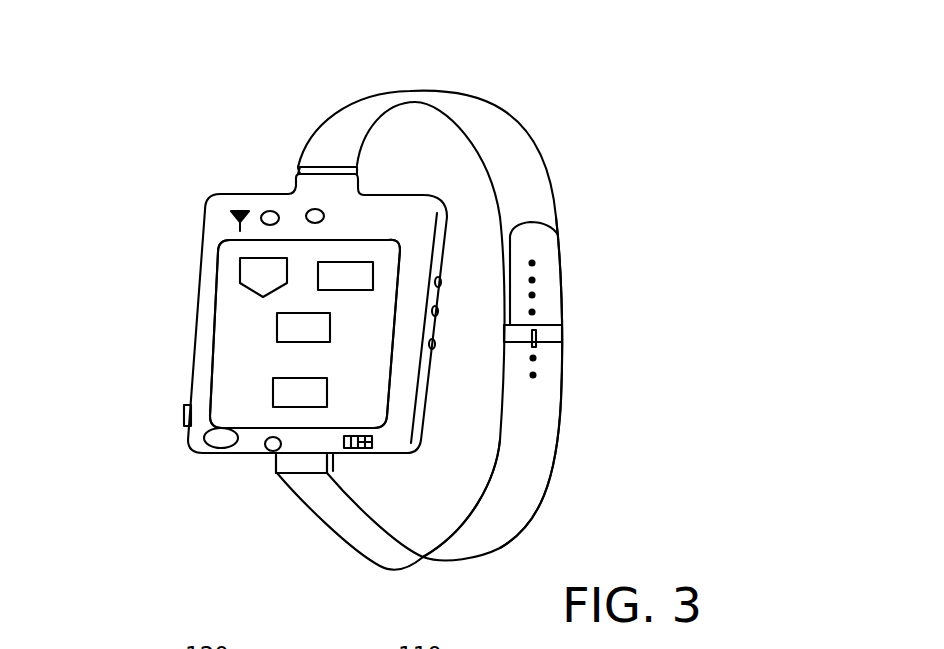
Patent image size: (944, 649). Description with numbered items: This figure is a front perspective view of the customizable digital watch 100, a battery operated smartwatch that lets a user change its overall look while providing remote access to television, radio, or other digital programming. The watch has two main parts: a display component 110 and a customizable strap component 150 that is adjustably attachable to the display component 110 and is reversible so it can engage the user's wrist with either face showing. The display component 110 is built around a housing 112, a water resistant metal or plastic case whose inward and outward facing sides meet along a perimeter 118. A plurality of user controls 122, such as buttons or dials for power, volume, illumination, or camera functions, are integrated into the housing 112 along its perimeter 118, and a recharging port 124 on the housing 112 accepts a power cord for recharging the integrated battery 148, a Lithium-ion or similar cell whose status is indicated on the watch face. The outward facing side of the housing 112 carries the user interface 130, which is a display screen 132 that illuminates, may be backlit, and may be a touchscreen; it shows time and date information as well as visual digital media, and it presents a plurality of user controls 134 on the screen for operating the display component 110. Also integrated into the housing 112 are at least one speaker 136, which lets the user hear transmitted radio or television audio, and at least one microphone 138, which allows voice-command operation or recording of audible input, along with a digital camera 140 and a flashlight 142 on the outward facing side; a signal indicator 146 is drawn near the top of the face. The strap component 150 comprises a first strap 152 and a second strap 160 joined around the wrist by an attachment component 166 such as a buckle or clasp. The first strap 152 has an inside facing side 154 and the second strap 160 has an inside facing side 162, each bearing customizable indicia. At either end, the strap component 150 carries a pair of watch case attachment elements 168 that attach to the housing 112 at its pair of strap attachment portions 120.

The customizable digital watch 100 is at (652, 197).
The display component 110 is at (197, 183).
The housing 112 is at (233, 176).
The perimeter 118 is at (272, 195).
The strap attachment portions 120 is at (327, 167).
The user controls 122 is at (438, 283).
The recharging port 124 is at (182, 413).
The user interface 130 is at (204, 318).
The display screen 132 is at (230, 372).
The user controls 134 is at (340, 290).
The speaker 136 is at (212, 440).
The microphone 138 is at (266, 451).
The digital camera 140 is at (320, 212).
The flashlight 142 is at (265, 219).
The signal indicator 146 is at (229, 215).
The battery 148 is at (373, 442).
The customizable strap component 150 is at (553, 140).
The first strap 152 is at (553, 195).
The inside facing side 154 is at (547, 196).
The second strap 160 is at (541, 522).
The inside facing side 162 is at (521, 526).
The attachment component 166 is at (563, 331).
The watch case attachment elements 168 is at (360, 166).